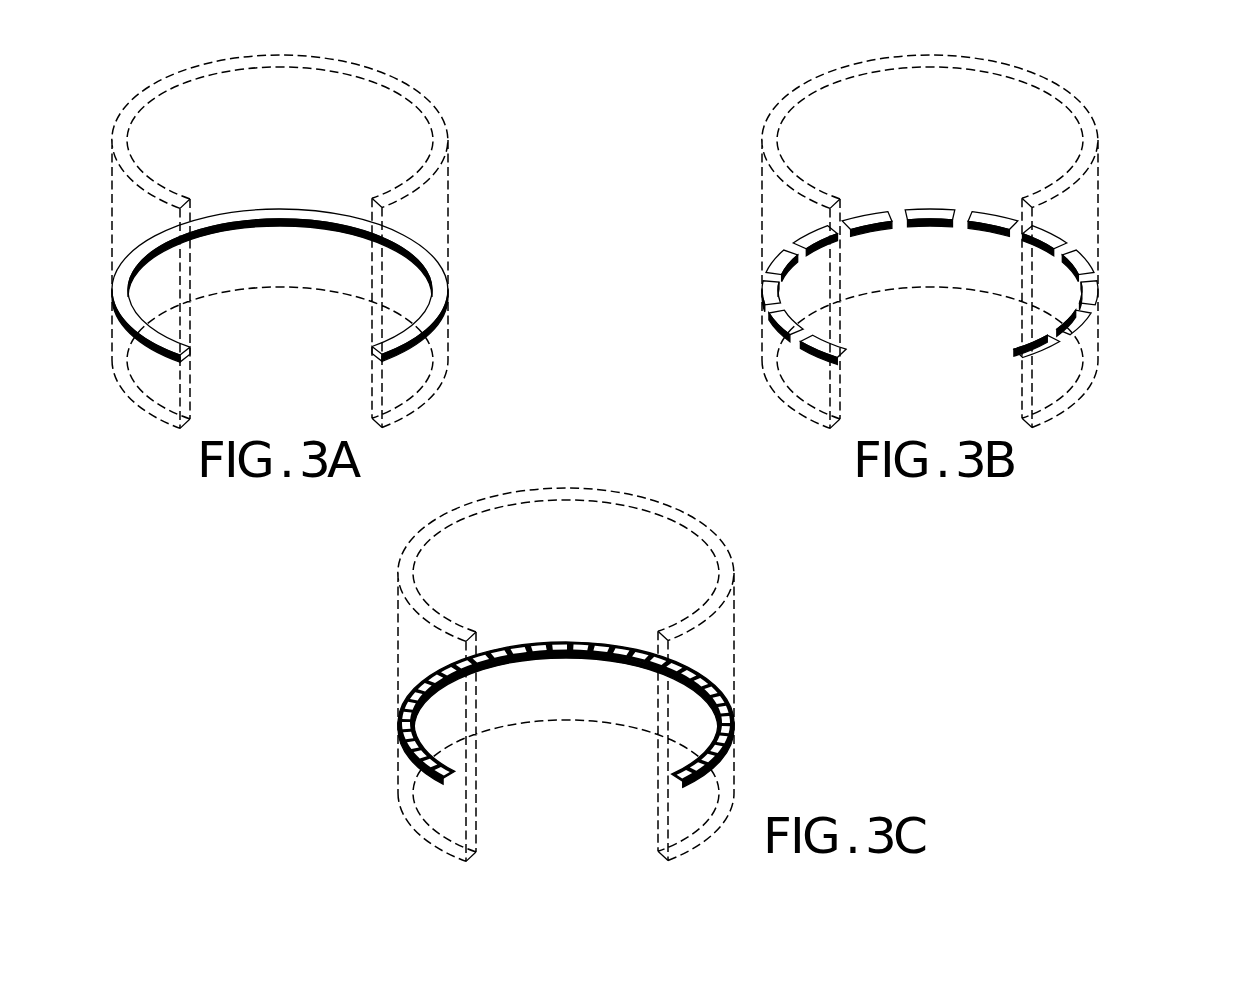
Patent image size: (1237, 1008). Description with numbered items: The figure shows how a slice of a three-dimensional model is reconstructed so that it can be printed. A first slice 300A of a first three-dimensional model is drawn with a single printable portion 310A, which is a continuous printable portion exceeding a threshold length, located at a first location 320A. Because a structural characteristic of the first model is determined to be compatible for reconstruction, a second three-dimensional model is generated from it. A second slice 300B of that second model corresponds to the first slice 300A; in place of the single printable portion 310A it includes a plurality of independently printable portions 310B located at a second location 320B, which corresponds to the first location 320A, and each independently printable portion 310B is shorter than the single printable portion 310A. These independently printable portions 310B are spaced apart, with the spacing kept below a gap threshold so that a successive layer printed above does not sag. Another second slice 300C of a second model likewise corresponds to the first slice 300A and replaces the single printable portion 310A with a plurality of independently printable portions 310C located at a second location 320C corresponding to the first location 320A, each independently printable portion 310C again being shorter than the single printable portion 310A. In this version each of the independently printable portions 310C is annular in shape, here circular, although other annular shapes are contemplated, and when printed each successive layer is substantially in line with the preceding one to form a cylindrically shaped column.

In FIG. 3A, the first slice 300A is at (307, 264).
In FIG. 3A, the single printable portion 310A is at (430, 231).
In FIG. 3A, the first location 320A is at (470, 300).
In FIG. 3B, the second slice 300B is at (957, 264).
In FIG. 3B, the independently printable portions 310B is at (966, 286).
In FIG. 3B, the second location 320B is at (981, 241).
In FIG. 3C, the second slice 300C is at (572, 674).
In FIG. 3C, the independently printable portions 310C is at (602, 713).
In FIG. 3C, the second location 320C is at (617, 674).